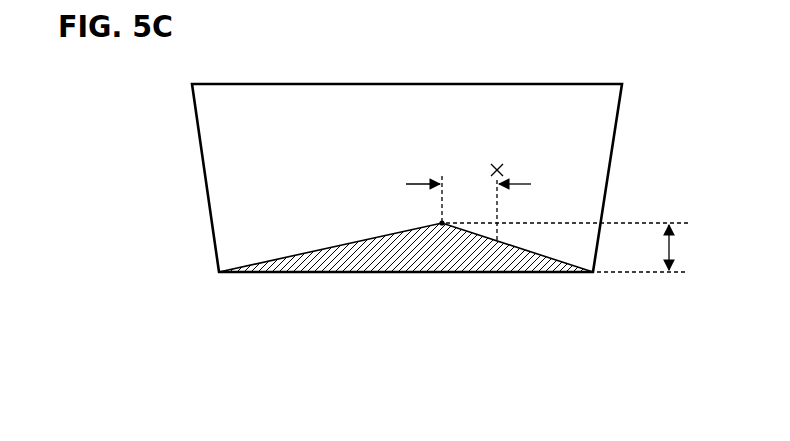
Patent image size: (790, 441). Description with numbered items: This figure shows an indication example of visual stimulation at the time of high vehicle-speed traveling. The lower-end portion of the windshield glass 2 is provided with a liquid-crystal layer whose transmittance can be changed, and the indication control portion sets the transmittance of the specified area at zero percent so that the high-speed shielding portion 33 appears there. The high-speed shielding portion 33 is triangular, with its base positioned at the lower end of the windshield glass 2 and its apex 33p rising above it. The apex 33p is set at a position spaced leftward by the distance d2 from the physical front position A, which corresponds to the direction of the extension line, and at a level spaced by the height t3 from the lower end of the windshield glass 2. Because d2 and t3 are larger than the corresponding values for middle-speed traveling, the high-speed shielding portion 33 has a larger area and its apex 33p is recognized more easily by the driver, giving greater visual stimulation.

The windshield glass 2 is at (200, 141).
The high-speed shielding portion 33 is at (340, 276).
The apex of the high-speed shielding portion 33p is at (444, 222).
The physical front position A is at (498, 166).
The leftward spacing of apex 33p from physical front position d2 is at (468, 201).
The height of apex 33p above lower end of windshield glass t3 is at (571, 247).